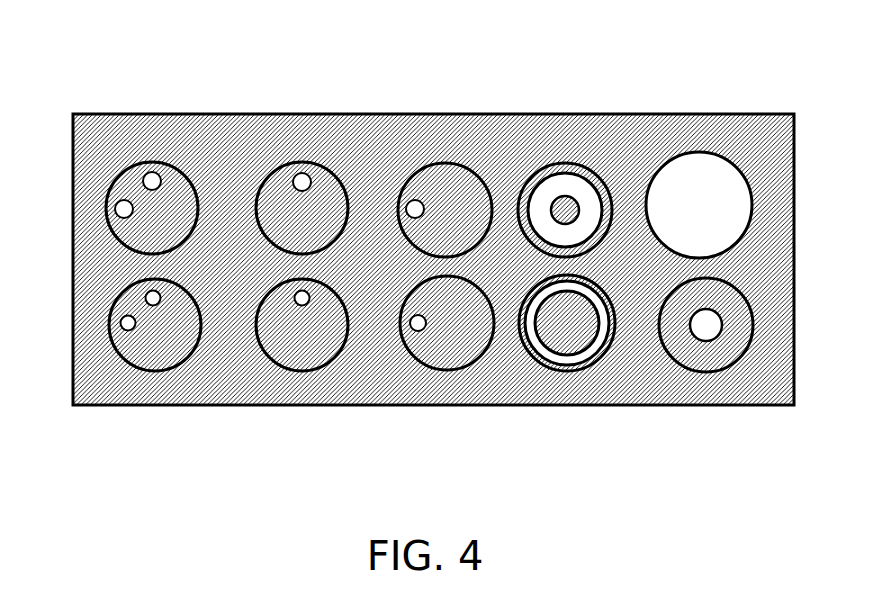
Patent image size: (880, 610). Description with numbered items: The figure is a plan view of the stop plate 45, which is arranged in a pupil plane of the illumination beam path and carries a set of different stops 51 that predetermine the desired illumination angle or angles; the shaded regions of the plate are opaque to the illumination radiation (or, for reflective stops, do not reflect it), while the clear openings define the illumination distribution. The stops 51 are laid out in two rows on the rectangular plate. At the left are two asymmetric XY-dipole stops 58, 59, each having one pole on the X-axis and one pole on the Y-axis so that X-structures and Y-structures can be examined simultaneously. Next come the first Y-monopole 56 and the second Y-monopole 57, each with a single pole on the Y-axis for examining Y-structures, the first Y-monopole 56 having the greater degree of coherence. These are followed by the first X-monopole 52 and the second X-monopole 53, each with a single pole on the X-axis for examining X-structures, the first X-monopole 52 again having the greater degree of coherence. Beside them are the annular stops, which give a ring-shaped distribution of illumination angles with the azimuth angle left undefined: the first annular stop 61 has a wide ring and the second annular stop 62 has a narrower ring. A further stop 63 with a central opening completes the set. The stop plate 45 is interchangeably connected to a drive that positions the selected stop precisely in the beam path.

The stop plate 45 is at (150, 91).
The stops 51 is at (807, 137).
The first X-monopole 52 is at (448, 176).
The second X-monopole 53 is at (458, 348).
The first Y-monopole 56 is at (330, 182).
The second Y-monopole 57 is at (297, 345).
The asymmetric XY-dipole stop 58 is at (129, 188).
The asymmetric XY-dipole stop 59 is at (138, 303).
The first annular stop 61 is at (565, 168).
The second annular stop 62 is at (562, 370).
The receptacle with central hole 63 is at (712, 363).